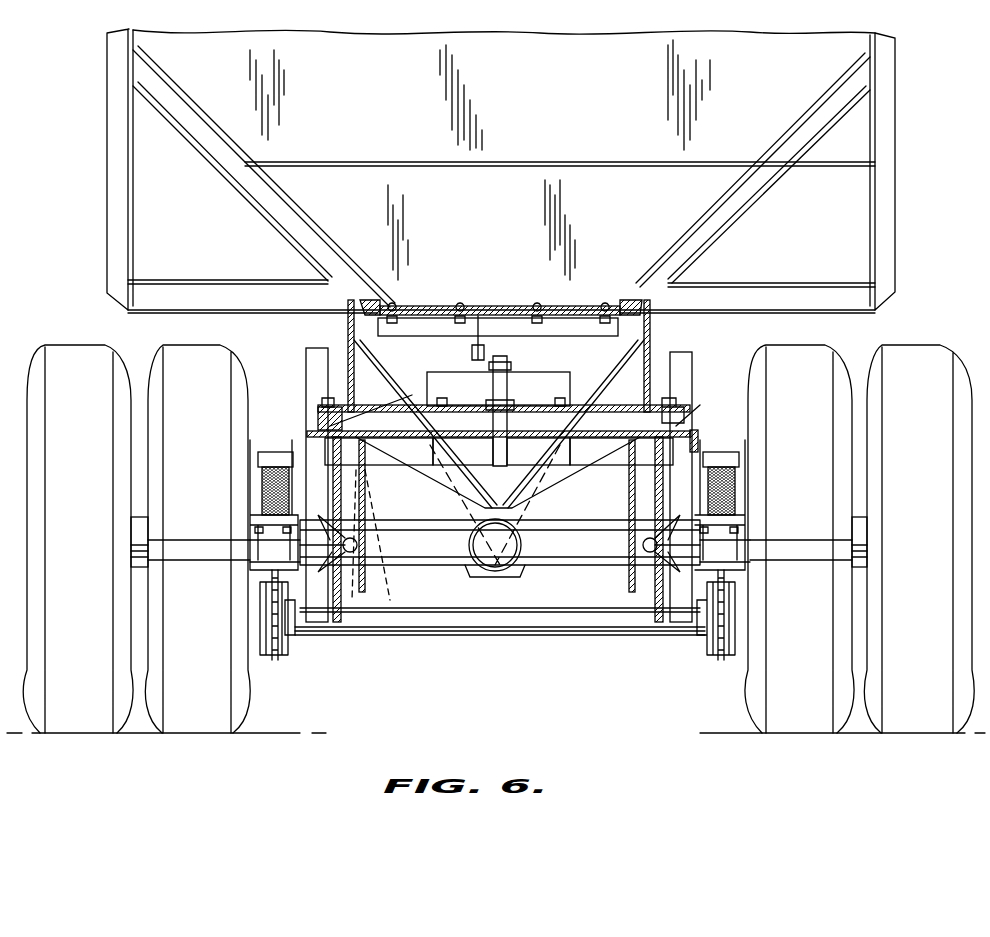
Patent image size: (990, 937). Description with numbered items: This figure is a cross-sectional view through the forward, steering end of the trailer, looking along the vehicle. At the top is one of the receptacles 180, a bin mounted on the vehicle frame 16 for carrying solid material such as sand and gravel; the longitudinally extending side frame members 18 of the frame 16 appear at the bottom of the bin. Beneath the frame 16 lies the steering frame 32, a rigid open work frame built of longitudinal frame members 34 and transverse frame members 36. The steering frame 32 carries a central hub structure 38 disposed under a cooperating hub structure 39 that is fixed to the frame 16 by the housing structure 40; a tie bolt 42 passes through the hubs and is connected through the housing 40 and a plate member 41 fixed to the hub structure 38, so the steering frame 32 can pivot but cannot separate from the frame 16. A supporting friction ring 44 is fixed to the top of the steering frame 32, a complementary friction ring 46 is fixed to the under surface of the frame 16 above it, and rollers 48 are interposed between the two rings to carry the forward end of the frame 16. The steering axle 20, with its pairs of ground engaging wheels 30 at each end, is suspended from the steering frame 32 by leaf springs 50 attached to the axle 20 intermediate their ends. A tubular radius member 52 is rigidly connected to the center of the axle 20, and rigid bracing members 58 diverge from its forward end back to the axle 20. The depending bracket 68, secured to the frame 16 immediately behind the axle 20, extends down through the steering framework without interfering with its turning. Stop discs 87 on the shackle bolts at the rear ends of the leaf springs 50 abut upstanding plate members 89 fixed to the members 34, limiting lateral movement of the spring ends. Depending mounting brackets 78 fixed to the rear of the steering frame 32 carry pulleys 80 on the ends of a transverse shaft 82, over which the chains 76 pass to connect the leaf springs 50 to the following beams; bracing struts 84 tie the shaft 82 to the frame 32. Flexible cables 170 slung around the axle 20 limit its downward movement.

The receptacle 180 is at (715, 190).
The ground engaging wheels 30 is at (175, 350).
The upstanding plate members 89 is at (308, 356).
The vehicle frame 16 is at (367, 347).
The side frame members 18 is at (360, 370).
The housing structure 40 is at (583, 378).
The friction ring 46 is at (318, 416).
The leaf springs 50 is at (268, 452).
The supporting friction ring 44 is at (318, 432).
The hub structure 39 is at (478, 404).
The tie bolt 42 is at (508, 386).
The rollers 48 is at (345, 416).
The steering frame 32 is at (698, 438).
The stop discs 87 is at (262, 482).
The longitudinal frame members 34 is at (335, 452).
The plate member 41 is at (490, 452).
The central hub structure 38 is at (530, 440).
The depending mounting bracket 78 is at (672, 484).
The transverse frame members 36 is at (371, 535).
The depending bracket 68 is at (425, 478).
The bracing struts 84 is at (525, 482).
The rigid bracing members 58 is at (356, 540).
The radius member 52 is at (520, 566).
The steering axle 20 is at (563, 567).
The flexible cables 170 is at (366, 590).
The chains 76 is at (270, 575).
The pulleys 80 is at (285, 648).
The transverse shaft 82 is at (450, 636).